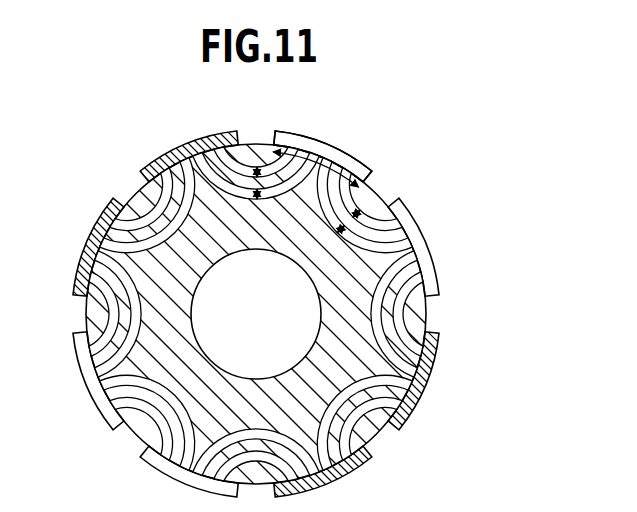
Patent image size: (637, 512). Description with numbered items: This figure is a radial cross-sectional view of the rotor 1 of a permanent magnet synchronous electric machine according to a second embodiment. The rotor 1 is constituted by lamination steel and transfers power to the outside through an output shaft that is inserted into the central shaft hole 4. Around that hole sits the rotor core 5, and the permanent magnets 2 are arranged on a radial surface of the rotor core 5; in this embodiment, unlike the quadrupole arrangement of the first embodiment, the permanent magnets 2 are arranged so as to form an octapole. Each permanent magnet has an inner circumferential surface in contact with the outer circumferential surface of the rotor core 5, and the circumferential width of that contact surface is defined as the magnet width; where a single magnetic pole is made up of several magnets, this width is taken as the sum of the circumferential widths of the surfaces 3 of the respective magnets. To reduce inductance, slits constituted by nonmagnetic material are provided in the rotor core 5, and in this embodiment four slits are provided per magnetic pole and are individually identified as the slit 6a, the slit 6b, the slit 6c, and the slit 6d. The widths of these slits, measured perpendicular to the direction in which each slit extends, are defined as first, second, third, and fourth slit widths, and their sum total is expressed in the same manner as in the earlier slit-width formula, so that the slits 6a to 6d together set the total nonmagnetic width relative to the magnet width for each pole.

The rotor 1 is at (258, 297).
The permanent magnets 2 is at (303, 143).
The surfaces 3 is at (256, 297).
The shaft hole 4 is at (300, 356).
The rotor core 5 is at (187, 378).
The slit 6a is at (217, 150).
The slit 6b is at (190, 157).
The slit 6c is at (413, 248).
The slit 6d is at (405, 226).